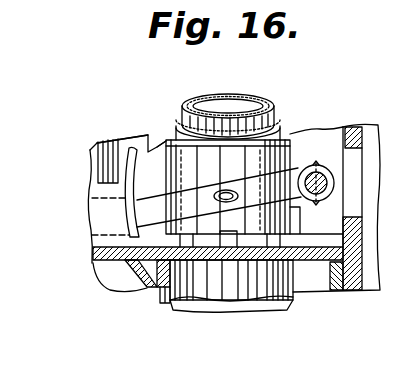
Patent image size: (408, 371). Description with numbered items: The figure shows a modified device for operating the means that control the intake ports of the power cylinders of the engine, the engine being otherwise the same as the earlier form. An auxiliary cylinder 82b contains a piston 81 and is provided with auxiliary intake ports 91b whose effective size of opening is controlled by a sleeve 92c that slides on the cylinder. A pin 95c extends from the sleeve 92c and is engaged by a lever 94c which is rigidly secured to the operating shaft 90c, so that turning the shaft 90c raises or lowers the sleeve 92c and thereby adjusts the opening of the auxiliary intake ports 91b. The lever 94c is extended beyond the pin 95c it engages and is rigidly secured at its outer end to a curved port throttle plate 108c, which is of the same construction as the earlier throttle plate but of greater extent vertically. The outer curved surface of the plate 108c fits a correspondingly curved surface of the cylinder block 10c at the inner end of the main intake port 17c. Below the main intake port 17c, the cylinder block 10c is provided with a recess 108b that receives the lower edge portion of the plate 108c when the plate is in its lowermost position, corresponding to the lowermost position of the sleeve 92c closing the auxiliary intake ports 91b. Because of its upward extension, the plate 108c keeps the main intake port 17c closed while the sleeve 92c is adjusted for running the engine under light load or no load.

The cylinder block 10c is at (91, 187).
The main intake port 17c is at (91, 230).
The piston 81 is at (220, 99).
The auxiliary cylinder 82b is at (283, 134).
The operating shaft 90c is at (324, 175).
The auxiliary intake ports 91b is at (248, 247).
The sleeve 92c is at (166, 146).
The lever 94c is at (292, 153).
The pin 95c is at (283, 146).
The recess 108b is at (147, 287).
The port throttle plate 108c is at (150, 134).